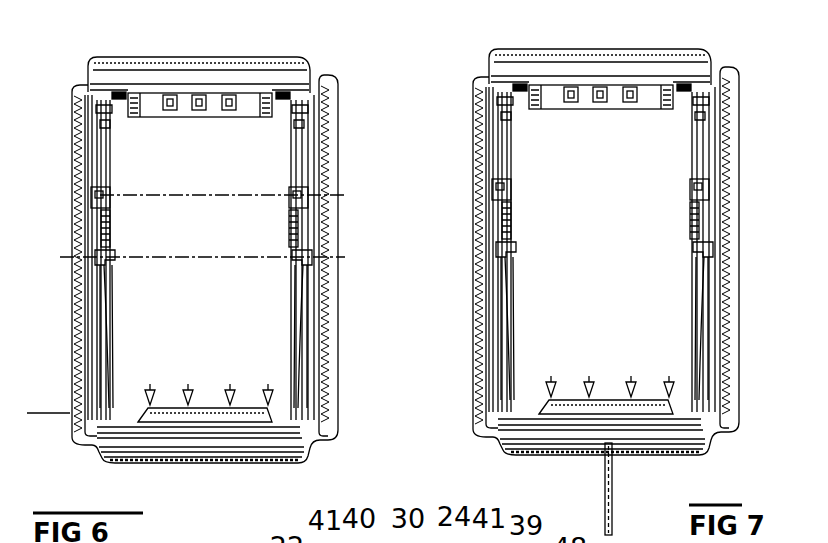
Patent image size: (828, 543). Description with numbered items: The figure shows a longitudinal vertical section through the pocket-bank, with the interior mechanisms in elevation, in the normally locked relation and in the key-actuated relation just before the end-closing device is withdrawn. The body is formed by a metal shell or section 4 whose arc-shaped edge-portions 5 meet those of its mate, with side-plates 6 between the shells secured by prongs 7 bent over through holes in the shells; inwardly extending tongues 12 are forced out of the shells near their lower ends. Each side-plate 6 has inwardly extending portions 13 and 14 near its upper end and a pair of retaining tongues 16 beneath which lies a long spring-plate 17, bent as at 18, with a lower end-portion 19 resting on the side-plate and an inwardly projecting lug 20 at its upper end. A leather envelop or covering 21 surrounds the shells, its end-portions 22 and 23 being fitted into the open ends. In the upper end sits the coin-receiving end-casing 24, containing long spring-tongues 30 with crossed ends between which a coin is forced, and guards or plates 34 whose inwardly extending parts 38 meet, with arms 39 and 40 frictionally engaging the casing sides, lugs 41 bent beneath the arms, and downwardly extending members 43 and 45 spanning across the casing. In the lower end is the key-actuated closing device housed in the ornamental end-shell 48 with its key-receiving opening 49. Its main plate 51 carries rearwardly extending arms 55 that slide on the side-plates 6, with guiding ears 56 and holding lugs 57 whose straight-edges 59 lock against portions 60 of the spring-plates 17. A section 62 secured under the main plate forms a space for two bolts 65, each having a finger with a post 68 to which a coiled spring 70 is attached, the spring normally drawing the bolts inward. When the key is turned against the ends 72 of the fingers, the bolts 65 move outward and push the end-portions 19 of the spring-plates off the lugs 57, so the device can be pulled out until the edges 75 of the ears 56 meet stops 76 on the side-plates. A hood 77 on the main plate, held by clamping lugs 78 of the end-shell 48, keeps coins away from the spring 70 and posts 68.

In FIG. 6, the metal shell or section 4 is at (113, 330).
In FIG. 7, the metal shell or section 4 is at (489, 322).
In FIG. 6, the arc-shaped side or edge-portions 5 is at (72, 135).
In FIG. 7, the arc-shaped side or edge-portions 5 is at (483, 140).
In FIG. 6, the side-plate 6 is at (107, 152).
In FIG. 7, the side-plate 6 is at (709, 165).
In FIG. 6, the prongs 7 is at (112, 108).
In FIG. 7, the prongs 7 is at (506, 113).
In FIG. 6, the inwardly extending prong-shaped members or tongues 12 is at (157, 390).
In FIG. 7, the inwardly extending prong-shaped members or tongues 12 is at (549, 388).
In FIG. 6, the inwardly extending portion 13 is at (112, 138).
In FIG. 7, the inwardly extending portion 13 is at (692, 128).
In FIG. 7, the inwardly extending portion 14 is at (692, 110).
In FIG. 6, the retaining or guiding tongues 16 is at (110, 202).
In FIG. 7, the retaining or guiding tongues 16 is at (695, 172).
In FIG. 6, the spring-plate 17 is at (100, 168).
In FIG. 7, the spring-plate 17 is at (503, 167).
In FIG. 6, the bend of spring-plate 18 is at (93, 232).
In FIG. 7, the bend of spring-plate 18 is at (717, 225).
In FIG. 6, the lower end-portion of spring-plate 19 is at (70, 195).
In FIG. 7, the lower end-portion of spring-plate 19 is at (470, 190).
In FIG. 6, the inwardly projecting tongue or lug 20 is at (60, 257).
In FIG. 7, the inwardly projecting tongue or lug 20 is at (473, 240).
In FIG. 6, the envelop or covering 21 is at (75, 312).
In FIG. 7, the envelop or covering 21 is at (739, 258).
In FIG. 6, the end-portion of covering 22 is at (84, 86).
In FIG. 7, the end-portion of covering 22 is at (489, 76).
In FIG. 6, the end-portion of covering 23 is at (80, 437).
In FIG. 7, the end-portion of covering 23 is at (480, 428).
In FIG. 6, the coin-receiving end-casing or shell 24 is at (257, 57).
In FIG. 7, the coin-receiving end-casing or shell 24 is at (659, 50).
In FIG. 6, the longitudinally extending spring-tongues 30 is at (233, 93).
In FIG. 7, the longitudinally extending spring-tongues 30 is at (634, 88).
In FIG. 6, the guard or plate 34 is at (245, 107).
In FIG. 7, the guard or plate 34 is at (602, 108).
In FIG. 6, the inwardly extending parts or elements 38 is at (138, 115).
In FIG. 7, the inwardly extending parts or elements 38 is at (652, 113).
In FIG. 6, the arm 39 is at (309, 72).
In FIG. 7, the arm 39 is at (685, 83).
In FIG. 6, the arm 40 is at (128, 95).
In FIG. 7, the arm 40 is at (528, 90).
In FIG. 6, the lugs or holding tongues 41 is at (123, 92).
In FIG. 7, the lugs or holding tongues 41 is at (518, 90).
In FIG. 6, the downwardly extending element or member 43 is at (333, 110).
In FIG. 7, the downwardly extending element or member 43 is at (709, 115).
In FIG. 6, the downwardly extending member 45 is at (100, 110).
In FIG. 7, the downwardly extending member 45 is at (509, 97).
In FIG. 6, the end-shell or casing 48 is at (300, 465).
In FIG. 7, the end-shell or casing 48 is at (709, 457).
In FIG. 6, the key-receiving hole or opening 49 is at (207, 470).
In FIG. 7, the key-receiving hole or opening 49 is at (615, 453).
In FIG. 6, the main plate or body 51 is at (243, 428).
In FIG. 7, the main plate or body 51 is at (655, 455).
In FIG. 6, the rearwardly extending arms 55 is at (120, 298).
In FIG. 7, the rearwardly extending arms 55 is at (692, 287).
In FIG. 6, the guiding-members or ears 56 is at (97, 260).
In FIG. 7, the guiding-members or ears 56 is at (690, 242).
In FIG. 7, the projections or holding lugs 57 is at (499, 440).
In FIG. 7, the straight-edges 59 is at (498, 447).
In FIG. 6, the portion of spring-plate 60 is at (93, 445).
In FIG. 7, the portion of spring-plate 60 is at (493, 450).
In FIG. 6, the section or element 62 is at (245, 463).
In FIG. 7, the section or element 62 is at (669, 457).
In FIG. 6, the bolts 65 is at (115, 457).
In FIG. 7, the bolts 65 is at (530, 447).
In FIG. 6, the post or lug 68 is at (233, 410).
In FIG. 7, the post or lug 68 is at (662, 403).
In FIG. 6, the coiled spring 70 is at (205, 410).
In FIG. 7, the coiled spring 70 is at (609, 400).
In FIG. 7, the ends of fingers 72 is at (695, 457).
In FIG. 6, the edges of guiding-members 75 is at (113, 277).
In FIG. 7, the edges of guiding-members 75 is at (692, 263).
In FIG. 6, the stops 76 is at (345, 395).
In FIG. 7, the stops 76 is at (719, 400).
In FIG. 6, the hood, shell or casing 77 is at (128, 413).
In FIG. 7, the hood, shell or casing 77 is at (630, 400).
In FIG. 6, the clamping lugs or tongues 78 is at (140, 413).
In FIG. 7, the clamping lugs or tongues 78 is at (529, 417).